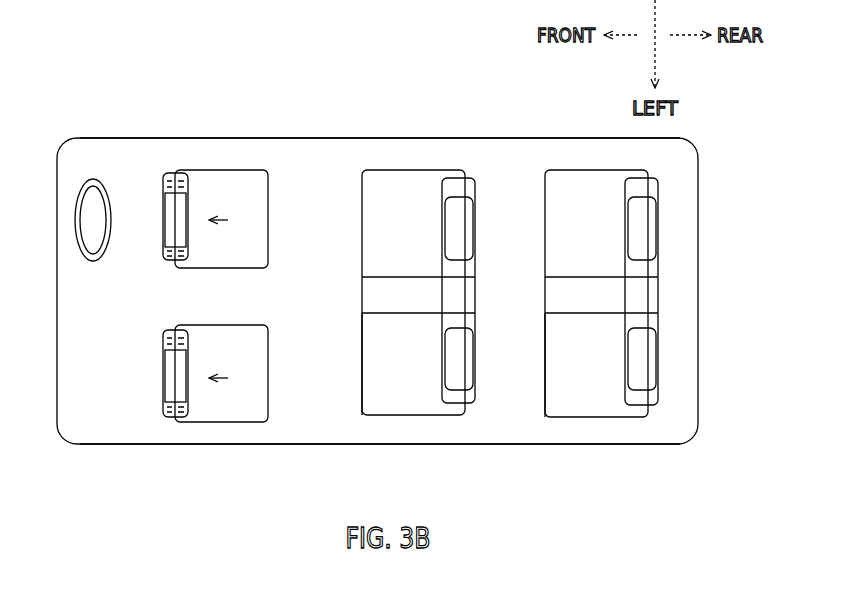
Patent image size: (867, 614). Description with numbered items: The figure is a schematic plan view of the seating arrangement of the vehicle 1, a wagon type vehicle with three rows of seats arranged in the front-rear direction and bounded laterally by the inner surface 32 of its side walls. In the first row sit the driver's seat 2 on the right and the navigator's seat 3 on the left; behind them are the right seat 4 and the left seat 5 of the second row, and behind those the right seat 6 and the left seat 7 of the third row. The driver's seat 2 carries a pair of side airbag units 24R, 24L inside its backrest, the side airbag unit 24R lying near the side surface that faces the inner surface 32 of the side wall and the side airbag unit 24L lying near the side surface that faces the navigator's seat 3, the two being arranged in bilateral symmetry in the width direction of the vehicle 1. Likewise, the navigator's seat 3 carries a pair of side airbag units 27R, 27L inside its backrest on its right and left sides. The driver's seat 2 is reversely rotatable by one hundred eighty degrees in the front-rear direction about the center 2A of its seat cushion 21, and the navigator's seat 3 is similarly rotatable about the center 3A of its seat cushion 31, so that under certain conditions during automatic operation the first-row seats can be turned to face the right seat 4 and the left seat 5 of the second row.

The vehicle 1 is at (372, 72).
The driver's seat 2 is at (185, 198).
The seat cushion 21 is at (236, 185).
The center of the seat cushion 2A is at (233, 220).
The side airbag unit 24L is at (158, 173).
The side airbag unit 24R is at (160, 258).
The navigator's seat 3 is at (176, 414).
The seat cushion 31 is at (220, 405).
The center of the seat cushion 3A is at (233, 378).
The side airbag unit 27L is at (163, 340).
The side airbag unit 27R is at (163, 407).
The inner surface of a side wall 32 is at (306, 150).
The right seat 4 is at (400, 185).
The left seat 5 is at (393, 390).
The right seat 6 is at (570, 190).
The left seat 7 is at (568, 398).